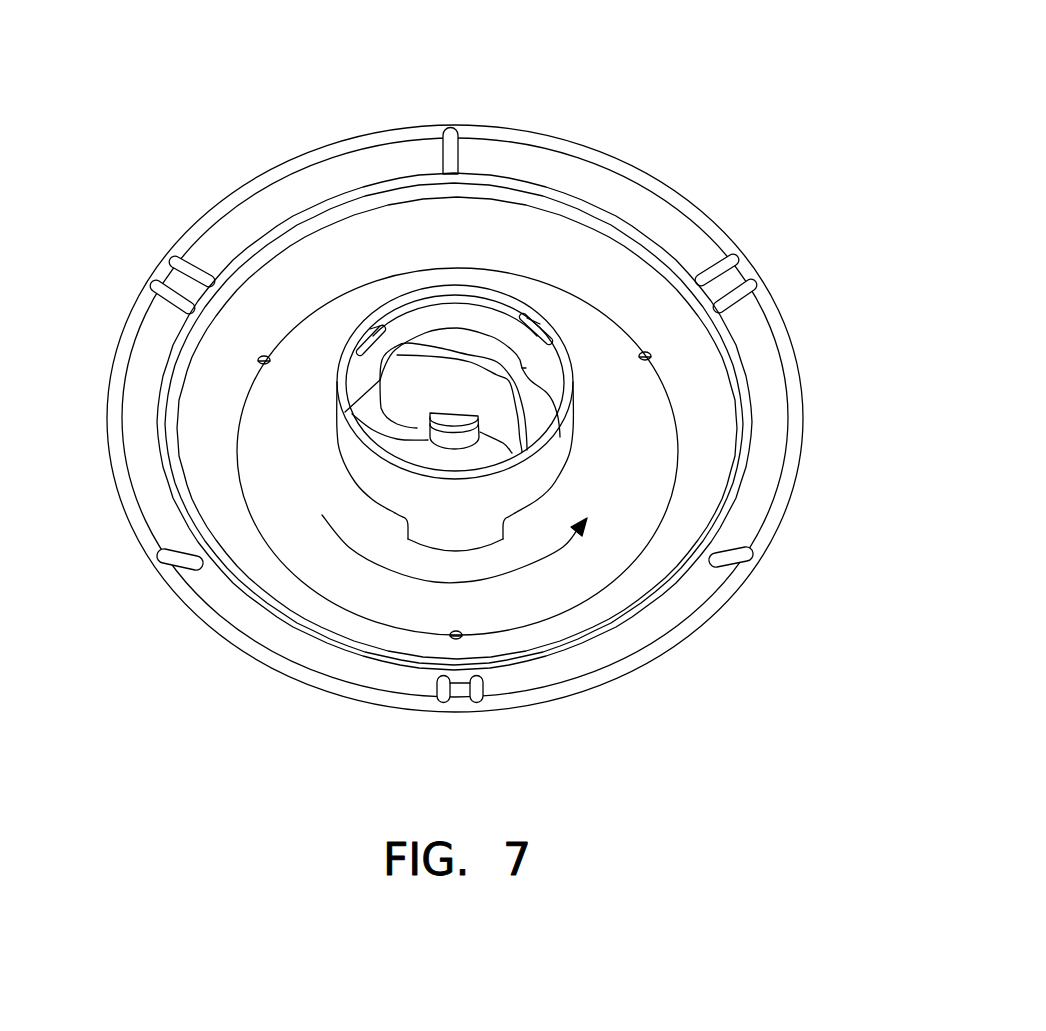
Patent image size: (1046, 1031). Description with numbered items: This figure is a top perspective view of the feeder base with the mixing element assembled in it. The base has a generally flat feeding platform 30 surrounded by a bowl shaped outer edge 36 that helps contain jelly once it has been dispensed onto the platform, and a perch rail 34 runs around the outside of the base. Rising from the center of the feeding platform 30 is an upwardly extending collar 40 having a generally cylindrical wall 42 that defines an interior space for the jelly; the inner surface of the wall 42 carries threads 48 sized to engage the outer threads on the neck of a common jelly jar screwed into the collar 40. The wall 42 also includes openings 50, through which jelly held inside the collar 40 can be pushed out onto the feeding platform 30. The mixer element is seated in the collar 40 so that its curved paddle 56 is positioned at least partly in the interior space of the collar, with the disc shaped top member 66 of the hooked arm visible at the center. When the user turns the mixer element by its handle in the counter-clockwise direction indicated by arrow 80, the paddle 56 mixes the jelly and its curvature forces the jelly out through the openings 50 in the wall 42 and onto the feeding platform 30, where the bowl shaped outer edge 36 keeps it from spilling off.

The feeding platform 30 is at (300, 413).
The perch rail 34 is at (604, 150).
The bowl shaped outer edge 36 is at (697, 498).
The collar 40 is at (575, 428).
The cylindrical wall 42 is at (442, 533).
The threads 48 is at (478, 305).
The openings 50 is at (560, 487).
The paddle 56 is at (518, 387).
The disc shaped top member 66 is at (447, 422).
The direction of rotation arrow 80 is at (560, 548).